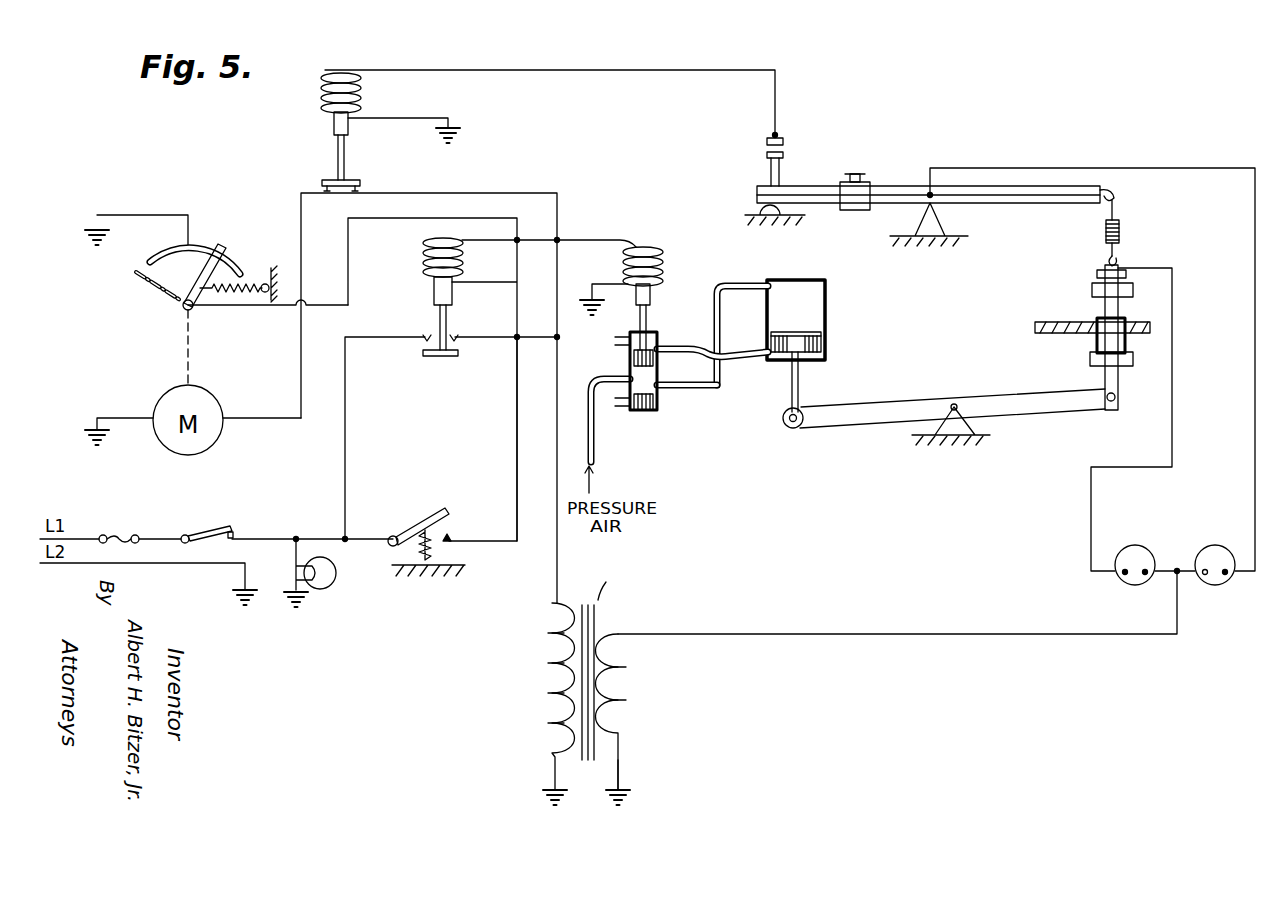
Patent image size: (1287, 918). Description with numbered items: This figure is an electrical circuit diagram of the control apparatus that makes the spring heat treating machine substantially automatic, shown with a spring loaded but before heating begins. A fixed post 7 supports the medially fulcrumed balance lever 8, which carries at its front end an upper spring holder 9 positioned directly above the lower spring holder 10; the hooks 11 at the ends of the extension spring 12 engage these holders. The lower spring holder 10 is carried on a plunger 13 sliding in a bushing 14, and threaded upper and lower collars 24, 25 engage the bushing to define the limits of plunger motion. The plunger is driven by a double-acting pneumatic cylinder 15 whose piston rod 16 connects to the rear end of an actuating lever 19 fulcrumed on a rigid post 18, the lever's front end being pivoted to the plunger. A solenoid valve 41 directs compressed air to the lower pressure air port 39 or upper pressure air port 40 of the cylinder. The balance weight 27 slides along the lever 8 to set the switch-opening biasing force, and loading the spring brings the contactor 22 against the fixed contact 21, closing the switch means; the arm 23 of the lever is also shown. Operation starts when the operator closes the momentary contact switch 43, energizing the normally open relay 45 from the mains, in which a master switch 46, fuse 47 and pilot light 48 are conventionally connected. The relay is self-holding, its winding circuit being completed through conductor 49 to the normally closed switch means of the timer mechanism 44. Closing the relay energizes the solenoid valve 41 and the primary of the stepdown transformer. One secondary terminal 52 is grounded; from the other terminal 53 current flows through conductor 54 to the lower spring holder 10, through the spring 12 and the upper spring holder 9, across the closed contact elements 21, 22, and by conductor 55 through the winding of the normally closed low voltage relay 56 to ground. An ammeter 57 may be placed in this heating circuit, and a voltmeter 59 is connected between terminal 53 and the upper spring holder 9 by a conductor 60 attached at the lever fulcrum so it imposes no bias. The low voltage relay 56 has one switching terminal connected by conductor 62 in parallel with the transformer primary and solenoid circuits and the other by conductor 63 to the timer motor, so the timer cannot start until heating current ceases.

The fixed post 7 is at (935, 230).
The balance lever 8 is at (1050, 206).
The upper spring holder 9 is at (1118, 196).
The lower spring holder 10 is at (1104, 260).
The hooks 11 is at (1116, 212).
The extension spring 12 is at (1122, 232).
The plunger 13 is at (1120, 306).
The bushing 14 is at (1097, 346).
The pneumatic cylinder 15 is at (827, 306).
The piston rod 16 is at (800, 384).
The rigid post 18 is at (990, 430).
The actuating lever 19 is at (880, 406).
The upper contact 21 is at (786, 140).
The upwardly facing contactor 22 is at (785, 156).
The beam arm 23 is at (998, 202).
The upper collar 24 is at (1092, 290).
The lower collar 25 is at (1100, 362).
The balance weight 27 is at (857, 207).
The lower pressure air port 39 is at (768, 356).
The upper pressure air port 40 is at (766, 276).
The solenoid valve 41 is at (658, 330).
The momentary contact switch 43 is at (426, 522).
The timer mechanism 44 is at (227, 234).
The relay 45 is at (419, 301).
The master switch 46 is at (222, 530).
The fuse 47 is at (120, 535).
The pilot light 48 is at (330, 586).
The conductor 49 is at (385, 218).
The transformer secondary terminal 52 is at (620, 756).
The transformer secondary terminal 53 is at (622, 630).
The conductor 54 is at (1058, 634).
The conductor 55 is at (572, 70).
The low voltage relay 56 is at (320, 70).
The ammeter 57 is at (1134, 546).
The voltmeter 59 is at (1220, 546).
The conductor 60 is at (1252, 254).
The conductor 62 is at (460, 194).
The conductor 63 is at (300, 355).